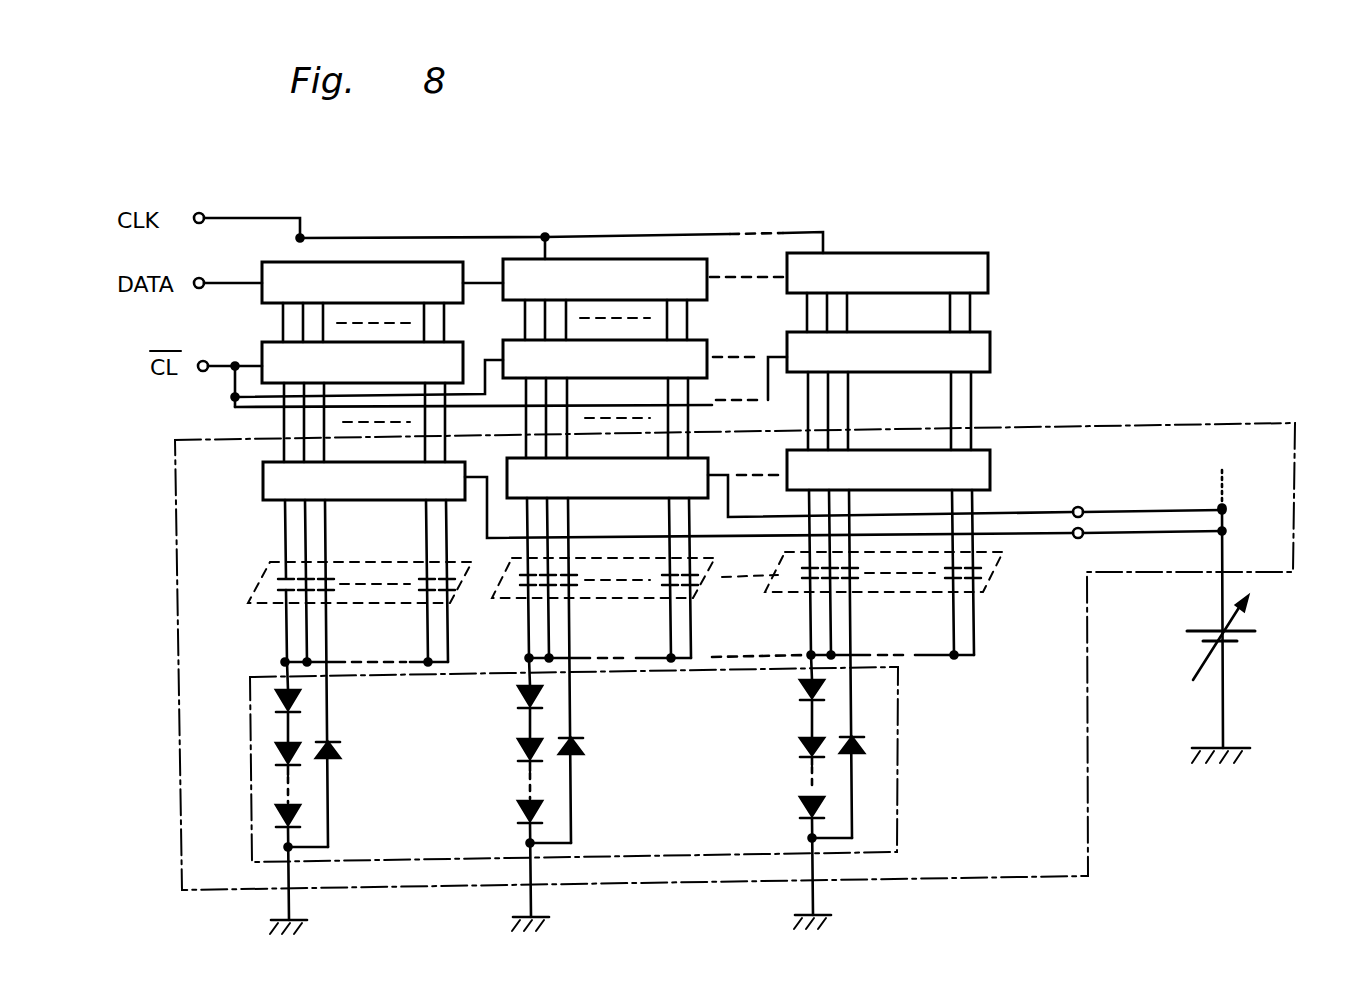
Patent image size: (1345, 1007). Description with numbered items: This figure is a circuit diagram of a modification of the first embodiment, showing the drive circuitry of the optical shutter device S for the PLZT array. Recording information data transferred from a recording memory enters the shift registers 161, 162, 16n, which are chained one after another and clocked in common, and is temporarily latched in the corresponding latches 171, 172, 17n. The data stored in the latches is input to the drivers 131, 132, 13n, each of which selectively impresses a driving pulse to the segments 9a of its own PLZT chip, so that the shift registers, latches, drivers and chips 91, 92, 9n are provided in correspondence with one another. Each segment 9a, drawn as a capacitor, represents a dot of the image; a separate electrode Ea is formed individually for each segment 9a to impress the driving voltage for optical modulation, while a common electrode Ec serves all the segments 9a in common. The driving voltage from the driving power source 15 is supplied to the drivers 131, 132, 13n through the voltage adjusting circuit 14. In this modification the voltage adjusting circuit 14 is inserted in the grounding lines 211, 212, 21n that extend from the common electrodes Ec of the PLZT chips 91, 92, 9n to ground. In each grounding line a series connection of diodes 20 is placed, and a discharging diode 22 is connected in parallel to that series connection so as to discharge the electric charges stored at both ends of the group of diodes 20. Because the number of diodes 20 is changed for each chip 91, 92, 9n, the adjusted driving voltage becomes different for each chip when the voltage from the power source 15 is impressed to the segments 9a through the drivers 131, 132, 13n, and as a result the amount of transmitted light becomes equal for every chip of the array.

The shift register 161 is at (413, 262).
The shift register 162 is at (636, 259).
The shift register 16n is at (941, 253).
The latch 171 is at (262, 343).
The latch 172 is at (511, 340).
The latch 17n is at (990, 337).
The driver 131 is at (263, 462).
The driver 132 is at (607, 478).
The driver 13n is at (992, 450).
The separate electrode Ea is at (284, 516).
The common electrode Ec is at (285, 632).
The segment 9a is at (282, 582).
The PLZT chip 91 is at (250, 593).
The PLZT chip 92 is at (700, 585).
The PLZT chip 9n is at (997, 570).
The grounding line 211 is at (214, 798).
The grounding line 212 is at (528, 663).
The grounding line 21n is at (808, 660).
The diodes 20 is at (200, 758).
The discharging diode 22 is at (340, 753).
The voltage adjusting circuit 14 is at (897, 775).
The driving power source 15 is at (1240, 640).
The optical shutter device S is at (1088, 793).